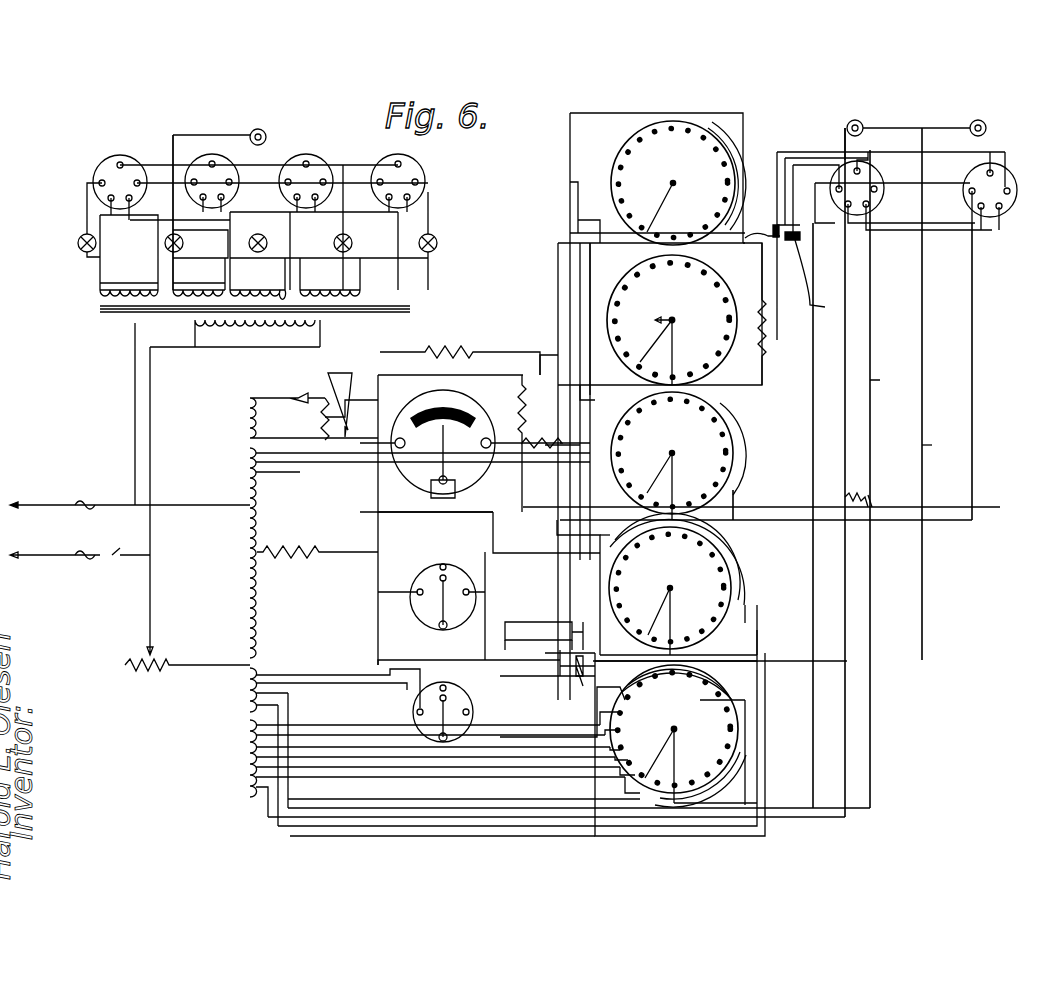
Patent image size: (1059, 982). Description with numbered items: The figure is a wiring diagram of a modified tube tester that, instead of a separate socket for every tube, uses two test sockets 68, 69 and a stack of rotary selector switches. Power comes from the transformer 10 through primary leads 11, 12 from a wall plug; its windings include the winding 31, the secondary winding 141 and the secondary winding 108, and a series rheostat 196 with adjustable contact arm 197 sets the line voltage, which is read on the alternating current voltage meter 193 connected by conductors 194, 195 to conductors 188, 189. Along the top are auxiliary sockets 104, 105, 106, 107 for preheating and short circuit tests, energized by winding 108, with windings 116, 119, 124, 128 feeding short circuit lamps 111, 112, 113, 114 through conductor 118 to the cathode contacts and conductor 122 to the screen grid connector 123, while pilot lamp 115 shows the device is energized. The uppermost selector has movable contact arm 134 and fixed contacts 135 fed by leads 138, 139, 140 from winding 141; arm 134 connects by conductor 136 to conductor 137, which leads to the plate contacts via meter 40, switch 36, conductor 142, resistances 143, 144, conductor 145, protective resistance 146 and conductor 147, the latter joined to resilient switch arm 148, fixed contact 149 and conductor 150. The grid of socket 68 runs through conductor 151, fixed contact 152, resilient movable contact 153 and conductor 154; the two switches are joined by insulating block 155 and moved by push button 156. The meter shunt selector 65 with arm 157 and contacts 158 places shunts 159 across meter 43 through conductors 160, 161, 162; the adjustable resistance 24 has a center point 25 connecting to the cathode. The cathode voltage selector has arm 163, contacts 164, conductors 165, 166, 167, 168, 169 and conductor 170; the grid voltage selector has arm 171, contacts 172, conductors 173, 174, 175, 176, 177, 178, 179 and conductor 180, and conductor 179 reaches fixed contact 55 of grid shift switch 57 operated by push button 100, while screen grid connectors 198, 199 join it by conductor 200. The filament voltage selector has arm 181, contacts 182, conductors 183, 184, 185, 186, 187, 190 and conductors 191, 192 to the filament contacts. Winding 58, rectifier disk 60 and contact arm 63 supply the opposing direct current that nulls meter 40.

The transformer 10 is at (350, 322).
The primary lead 11 is at (64, 555).
The primary lead 12 is at (68, 505).
The adjustable resistance 24 is at (874, 503).
The center point 25 is at (870, 490).
The winding 31 is at (246, 538).
The switch 36 is at (491, 654).
The meter 40 is at (448, 562).
The meter 43 is at (447, 404).
The fixed contact 55 is at (568, 670).
The grid shift switch 57 is at (540, 668).
The winding 58 is at (246, 415).
The rectifier disk 60 is at (292, 394).
The adjustable contact arm 63 is at (324, 417).
The meter shunt selector 65 is at (660, 314).
The socket 68 is at (852, 160).
The socket 69 is at (1005, 186).
The push button 100 is at (572, 618).
The socket 104 is at (397, 158).
The socket 105 is at (304, 156).
The socket 106 is at (210, 156).
The socket 107 is at (118, 156).
The secondary winding 108 is at (122, 316).
The lamp 111 is at (435, 250).
The lamp 112 is at (78, 250).
The lamp 113 is at (334, 246).
The lamp 114 is at (165, 243).
The pilot lamp 115 is at (259, 240).
The secondary winding 116 is at (190, 288).
The conductor 118 is at (343, 165).
The secondary winding 119 is at (250, 288).
The conductor 122 is at (173, 140).
The screen grid connector 123 is at (255, 130).
The winding 124 is at (318, 288).
The winding 128 is at (362, 288).
The movable contact arm 134 is at (675, 205).
The fixed contacts 135 is at (620, 196).
The conductor 136 is at (700, 205).
The conductor 137 is at (527, 355).
The lead 138 is at (570, 283).
The lead 139 is at (570, 258).
The lead 140 is at (585, 268).
The secondary winding 141 is at (250, 475).
The conductor 142 is at (490, 580).
The resistance 143 is at (515, 415).
The resistance 144 is at (530, 440).
The conductor 145 is at (735, 385).
The protective resistance 146 is at (772, 300).
The conductor 147 is at (810, 150).
The resilient switch arm 148 is at (790, 210).
The fixed contact 149 is at (775, 226).
The conductor 150 is at (777, 155).
The conductor 151 is at (876, 180).
The fixed contact 152 is at (800, 240).
The resilient movable contact 153 is at (796, 225).
The conductor 154 is at (890, 190).
The insulating block 155 is at (813, 290).
The push button 156 is at (765, 244).
The movable contact arm 157 is at (672, 325).
The fixed contacts 158 is at (645, 322).
The shunts 159 is at (615, 316).
The conductor 160 is at (615, 326).
The conductor 161 is at (382, 415).
The conductor 162 is at (672, 350).
The movable contact arm 163 is at (660, 483).
The fixed contacts 164 is at (636, 495).
The conductor 165 is at (620, 420).
The conductor 166 is at (612, 400).
The conductor 167 is at (562, 515).
The conductor 168 is at (738, 490).
The conductor 169 is at (765, 504).
The conductor 170 is at (795, 520).
The movable contact arm 171 is at (660, 625).
The fixed contacts 172 is at (640, 628).
The conductor 173 is at (632, 640).
The conductor 174 is at (625, 545).
The conductor 175 is at (740, 570).
The conductor 176 is at (760, 608).
The conductor 177 is at (765, 625).
The conductor 178 is at (556, 553).
The conductor 179 is at (525, 618).
The conductor 180 is at (782, 655).
The movable contact arm 181 is at (660, 748).
The fixed contacts 182 is at (628, 738).
The conductor 183 is at (548, 740).
The conductor 184 is at (560, 750).
The conductor 185 is at (505, 765).
The conductor 186 is at (540, 778).
The conductor 187 is at (542, 790).
The conductor 188 is at (543, 812).
The conductor 189 is at (540, 818).
The conductor 190 is at (555, 820).
The conductor 191 is at (872, 388).
The conductor 192 is at (315, 738).
The alternating current voltage meter 193 is at (468, 692).
The conductor 194 is at (418, 800).
The conductor 195 is at (500, 737).
The series rheostat 196 is at (163, 660).
The adjustable contact arm 197 is at (152, 618).
The screen grid connector 198 is at (863, 126).
The screen grid connector 199 is at (986, 128).
The conductor 200 is at (944, 446).